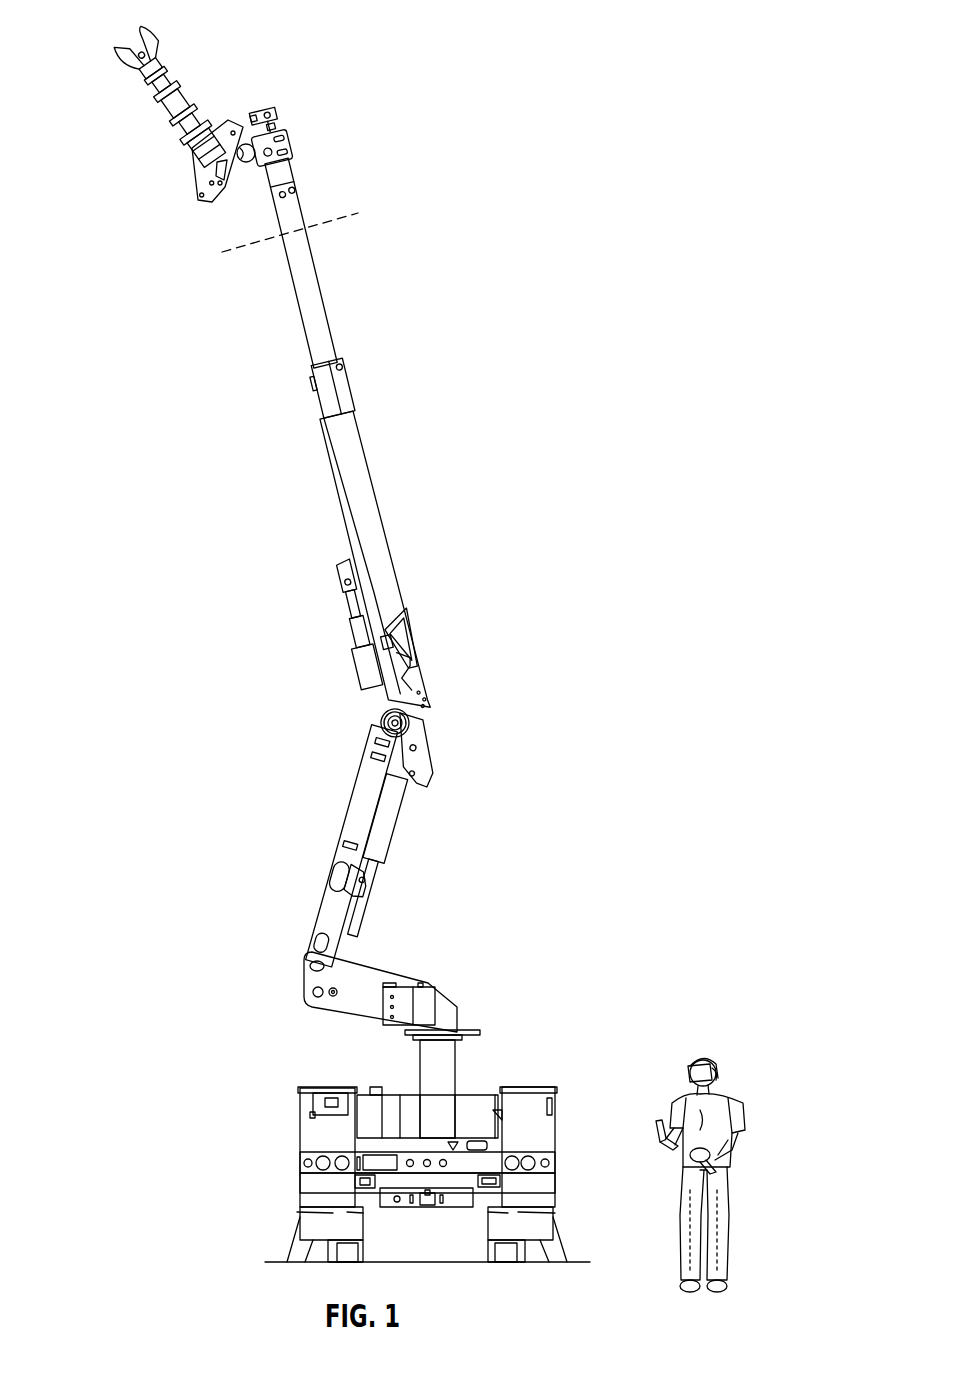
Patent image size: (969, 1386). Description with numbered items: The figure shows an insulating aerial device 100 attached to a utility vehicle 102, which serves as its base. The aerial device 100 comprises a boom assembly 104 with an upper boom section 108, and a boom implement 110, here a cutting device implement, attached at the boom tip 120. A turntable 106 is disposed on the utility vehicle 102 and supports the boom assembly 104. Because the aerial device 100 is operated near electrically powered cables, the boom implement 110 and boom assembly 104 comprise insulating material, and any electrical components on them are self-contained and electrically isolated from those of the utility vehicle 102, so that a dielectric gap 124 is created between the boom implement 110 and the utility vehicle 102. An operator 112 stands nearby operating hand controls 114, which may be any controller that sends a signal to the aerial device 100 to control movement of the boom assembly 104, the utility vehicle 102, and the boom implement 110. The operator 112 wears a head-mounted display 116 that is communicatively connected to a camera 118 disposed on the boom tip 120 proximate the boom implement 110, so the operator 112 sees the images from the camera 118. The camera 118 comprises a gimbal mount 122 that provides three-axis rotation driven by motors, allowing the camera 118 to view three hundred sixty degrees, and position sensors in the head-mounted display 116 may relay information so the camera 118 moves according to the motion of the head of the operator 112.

The aerial device 100 is at (440, 108).
The utility vehicle 102 is at (300, 1133).
The boom assembly 104 is at (440, 492).
The turntable 106 is at (478, 1033).
The upper boom section 108 is at (277, 492).
The boom implement 110 is at (213, 48).
The operator 112 is at (750, 1070).
The hand controls 114 is at (661, 1107).
The head-mounted display 116 is at (693, 1051).
The camera 118 is at (272, 93).
The boom tip 120 is at (318, 173).
The gimbal mount 122 is at (282, 132).
The dielectric gap 124 is at (232, 263).